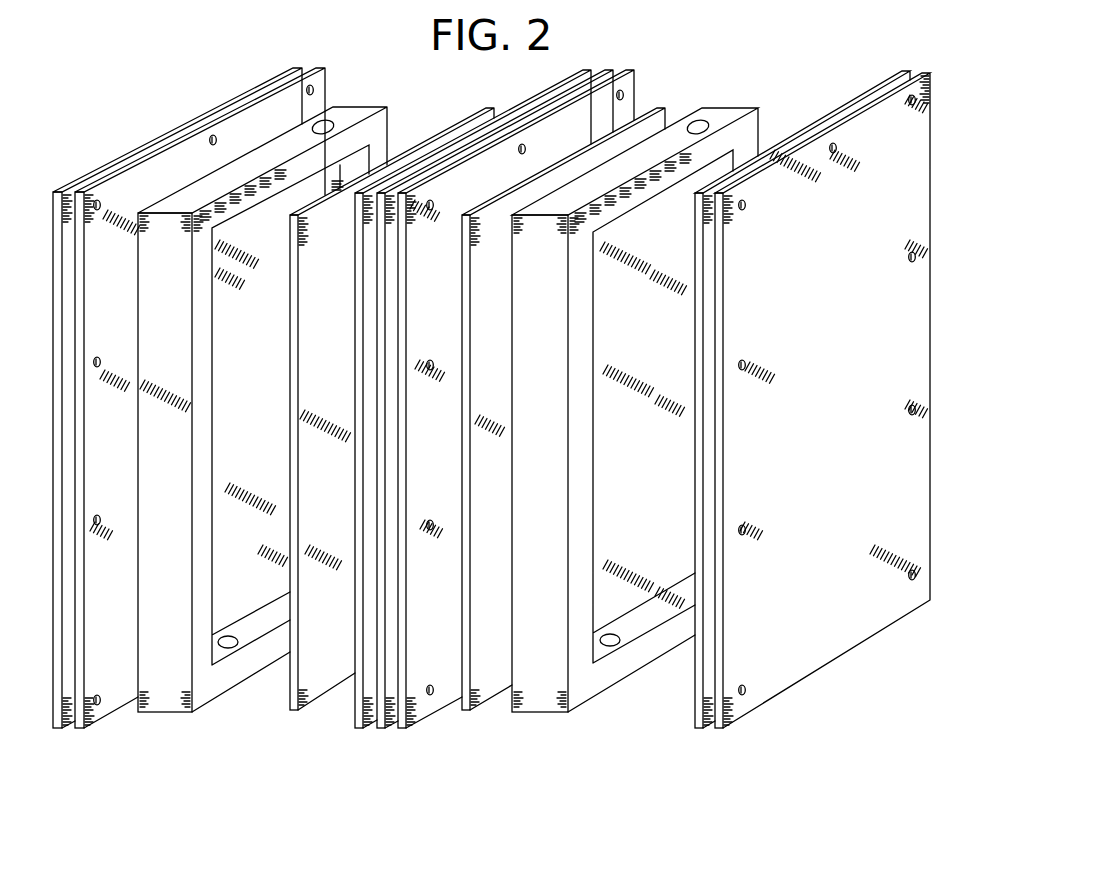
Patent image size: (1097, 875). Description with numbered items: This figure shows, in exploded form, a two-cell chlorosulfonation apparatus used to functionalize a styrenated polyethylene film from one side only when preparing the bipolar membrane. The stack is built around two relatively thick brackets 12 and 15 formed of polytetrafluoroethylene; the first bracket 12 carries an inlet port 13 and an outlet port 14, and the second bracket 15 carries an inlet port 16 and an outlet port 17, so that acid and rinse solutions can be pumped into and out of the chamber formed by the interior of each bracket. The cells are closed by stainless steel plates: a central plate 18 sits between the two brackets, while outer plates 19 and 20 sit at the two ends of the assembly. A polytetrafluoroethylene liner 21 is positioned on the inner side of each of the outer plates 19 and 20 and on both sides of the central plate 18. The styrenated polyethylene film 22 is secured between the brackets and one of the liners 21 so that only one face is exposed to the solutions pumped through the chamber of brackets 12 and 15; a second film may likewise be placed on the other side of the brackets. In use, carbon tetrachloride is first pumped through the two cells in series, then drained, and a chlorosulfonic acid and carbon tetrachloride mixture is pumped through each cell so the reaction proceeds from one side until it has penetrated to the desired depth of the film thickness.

The bracket 12 is at (169, 459).
The inlet port 13 is at (236, 648).
The outlet port 14 is at (333, 121).
The bracket 15 is at (635, 200).
The inlet port 16 is at (620, 639).
The outlet port 17 is at (712, 123).
The central stainless steel plate 18 is at (613, 73).
The outer stainless steel plate 19 is at (69, 186).
The outer stainless steel plate 20 is at (853, 294).
The polytetrafluoroethylene liner 21 is at (155, 165).
The styrenated polyethylene film 22 is at (339, 273).